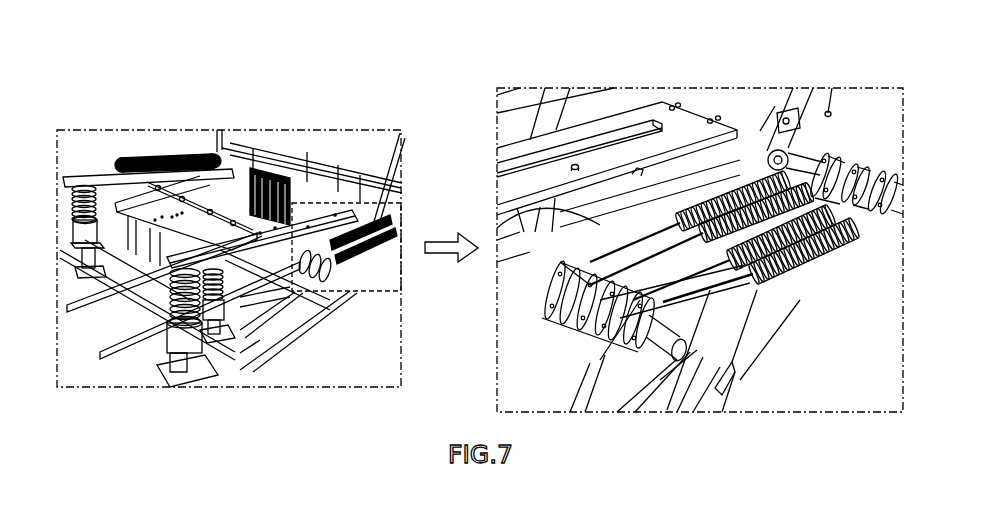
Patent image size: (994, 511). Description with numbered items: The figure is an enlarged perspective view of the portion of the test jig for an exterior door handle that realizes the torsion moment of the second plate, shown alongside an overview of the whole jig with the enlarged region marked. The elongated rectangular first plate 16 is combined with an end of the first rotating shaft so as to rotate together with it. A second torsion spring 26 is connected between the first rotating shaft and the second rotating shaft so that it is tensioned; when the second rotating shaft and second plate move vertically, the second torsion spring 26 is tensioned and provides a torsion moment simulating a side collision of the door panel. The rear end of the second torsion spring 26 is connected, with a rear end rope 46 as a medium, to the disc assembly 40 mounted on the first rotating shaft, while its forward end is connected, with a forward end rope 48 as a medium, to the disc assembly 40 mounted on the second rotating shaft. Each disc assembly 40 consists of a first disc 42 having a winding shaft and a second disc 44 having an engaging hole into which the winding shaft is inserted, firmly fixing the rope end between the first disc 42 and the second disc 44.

The first plate 16 is at (700, 92).
The second torsion spring 26 is at (810, 257).
The disc assembly 40 is at (670, 227).
The first disc 42 is at (565, 306).
The second disc 44 is at (562, 328).
The rear end rope 46 is at (818, 138).
The forward end rope 48 is at (627, 250).